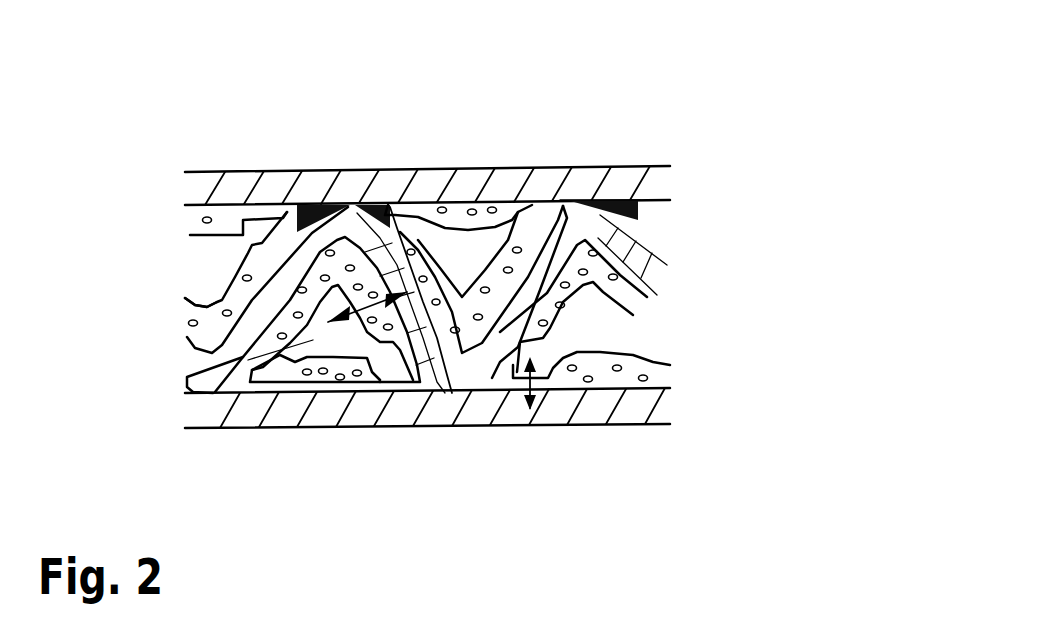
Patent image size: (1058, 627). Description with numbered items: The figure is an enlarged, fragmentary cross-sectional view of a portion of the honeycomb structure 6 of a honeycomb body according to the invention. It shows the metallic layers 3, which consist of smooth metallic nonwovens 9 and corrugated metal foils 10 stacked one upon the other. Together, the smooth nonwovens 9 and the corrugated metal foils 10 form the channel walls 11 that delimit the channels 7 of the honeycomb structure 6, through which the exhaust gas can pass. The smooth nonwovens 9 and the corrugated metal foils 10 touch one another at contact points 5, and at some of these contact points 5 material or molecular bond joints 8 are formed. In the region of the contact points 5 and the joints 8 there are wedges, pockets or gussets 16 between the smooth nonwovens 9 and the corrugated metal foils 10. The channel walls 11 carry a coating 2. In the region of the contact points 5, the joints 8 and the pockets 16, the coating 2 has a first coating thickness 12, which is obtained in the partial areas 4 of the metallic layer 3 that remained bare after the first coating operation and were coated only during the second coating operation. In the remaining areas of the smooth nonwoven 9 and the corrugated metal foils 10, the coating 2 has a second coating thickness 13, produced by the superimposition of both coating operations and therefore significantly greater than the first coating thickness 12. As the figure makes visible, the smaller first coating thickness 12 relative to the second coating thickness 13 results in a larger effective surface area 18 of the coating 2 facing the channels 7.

The coating 2 is at (438, 183).
The metallic layer 3 is at (658, 180).
The partial area 4 is at (608, 195).
The contact point 5 is at (592, 200).
The honeycomb structure 6 is at (667, 160).
The channel 7 is at (250, 380).
The material joint 8 is at (303, 205).
The smooth metallic nonwoven 9 is at (367, 410).
The corrugated metal foil 10 is at (655, 285).
The channel wall 11 is at (202, 297).
The first coating thickness 12 is at (547, 430).
The second coating thickness 13 is at (328, 325).
The pocket 16 is at (262, 222).
The effective surface area 18 is at (233, 270).